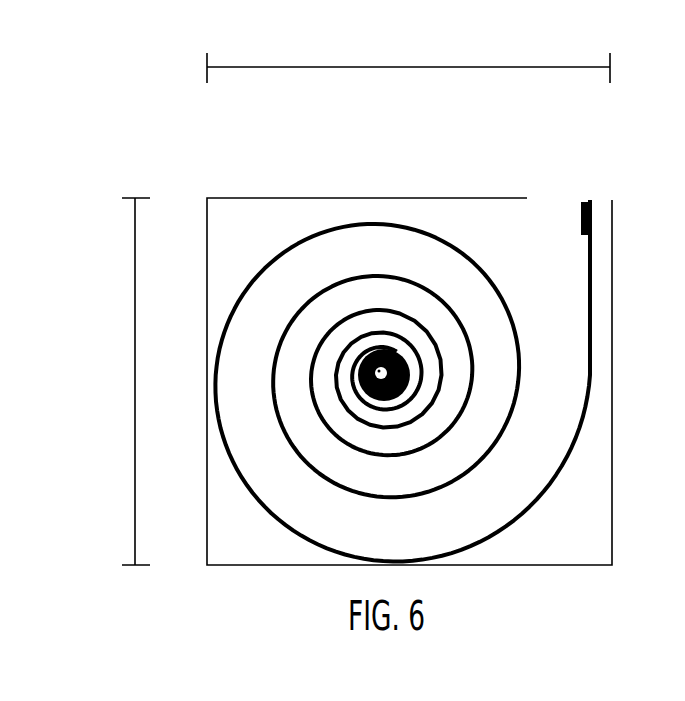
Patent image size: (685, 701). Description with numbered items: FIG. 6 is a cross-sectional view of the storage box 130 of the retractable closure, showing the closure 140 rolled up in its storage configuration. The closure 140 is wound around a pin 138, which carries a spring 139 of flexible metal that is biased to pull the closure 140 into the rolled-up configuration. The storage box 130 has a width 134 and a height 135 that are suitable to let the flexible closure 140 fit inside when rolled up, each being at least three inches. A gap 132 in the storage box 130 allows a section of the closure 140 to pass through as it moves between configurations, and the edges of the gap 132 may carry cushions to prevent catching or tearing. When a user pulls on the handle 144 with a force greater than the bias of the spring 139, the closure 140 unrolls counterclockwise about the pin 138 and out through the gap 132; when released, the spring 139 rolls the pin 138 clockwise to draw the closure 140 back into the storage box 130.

The storage box 130 is at (174, 146).
The gap 132 is at (600, 201).
The width 134 is at (408, 58).
The height 135 is at (122, 381).
The pin 138 is at (363, 362).
The spring 139 is at (395, 351).
The closure 140 is at (583, 425).
The handle 144 is at (583, 202).